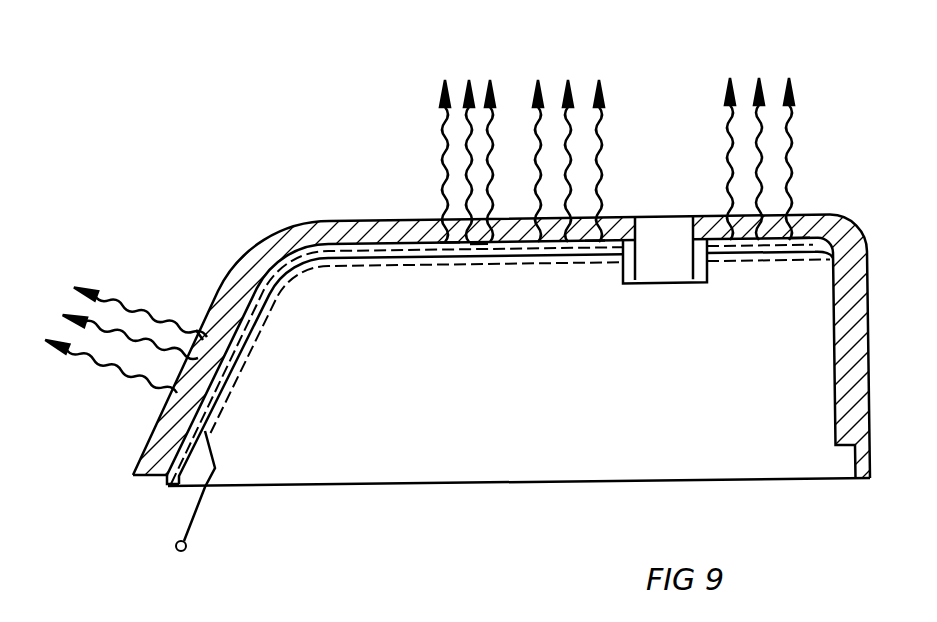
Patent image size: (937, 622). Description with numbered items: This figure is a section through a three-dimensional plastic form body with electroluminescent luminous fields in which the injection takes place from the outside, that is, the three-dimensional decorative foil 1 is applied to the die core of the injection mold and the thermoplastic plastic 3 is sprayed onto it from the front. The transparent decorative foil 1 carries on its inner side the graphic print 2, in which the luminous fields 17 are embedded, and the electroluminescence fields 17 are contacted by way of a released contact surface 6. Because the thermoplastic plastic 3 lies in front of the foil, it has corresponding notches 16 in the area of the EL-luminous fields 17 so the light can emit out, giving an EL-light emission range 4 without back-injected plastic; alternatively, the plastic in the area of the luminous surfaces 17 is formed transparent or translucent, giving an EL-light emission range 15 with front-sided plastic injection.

The decorative foil 1 is at (174, 488).
The graphic print 2 is at (145, 483).
The thermoplastic plastic 3 is at (138, 466).
The EL-light emission range 4 is at (467, 132).
The contact surface 6 is at (200, 506).
The EL-light emission range 15 is at (407, 208).
The notch 16 is at (479, 246).
The luminous fields 17 is at (447, 233).